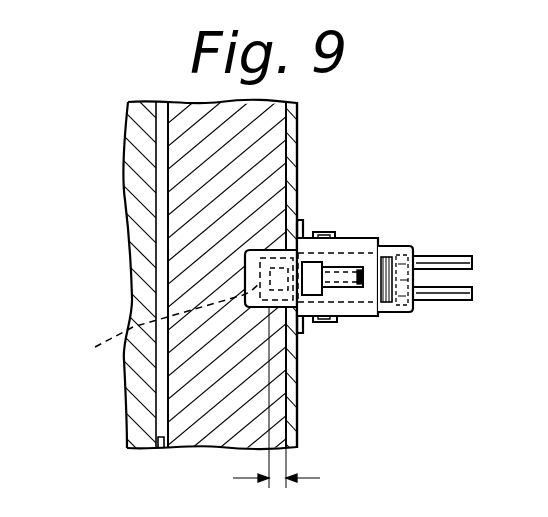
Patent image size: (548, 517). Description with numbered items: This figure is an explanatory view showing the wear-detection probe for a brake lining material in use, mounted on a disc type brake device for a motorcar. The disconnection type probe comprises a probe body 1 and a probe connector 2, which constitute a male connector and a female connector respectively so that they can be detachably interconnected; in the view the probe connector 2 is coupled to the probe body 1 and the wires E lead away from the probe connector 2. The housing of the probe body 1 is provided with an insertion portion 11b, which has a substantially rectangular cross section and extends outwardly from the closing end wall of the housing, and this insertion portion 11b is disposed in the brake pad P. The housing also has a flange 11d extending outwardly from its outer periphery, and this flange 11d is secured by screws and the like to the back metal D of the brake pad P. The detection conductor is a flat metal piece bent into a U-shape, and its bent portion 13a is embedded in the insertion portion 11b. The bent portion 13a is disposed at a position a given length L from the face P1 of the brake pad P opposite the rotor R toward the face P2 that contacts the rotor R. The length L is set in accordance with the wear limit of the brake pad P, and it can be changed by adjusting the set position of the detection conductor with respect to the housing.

The brake pad P is at (270, 130).
The face opposite the rotor P1 is at (297, 163).
The face contacting with the rotor P2 is at (168, 163).
The rotor R is at (163, 450).
The probe body 1 is at (347, 232).
The probe connector 2 is at (407, 245).
The insertion portion 11b is at (248, 292).
The flange 11d is at (302, 328).
The bent portion 13a is at (155, 322).
The electric wires E is at (443, 255).
The back metal D is at (297, 398).
The length L is at (278, 482).